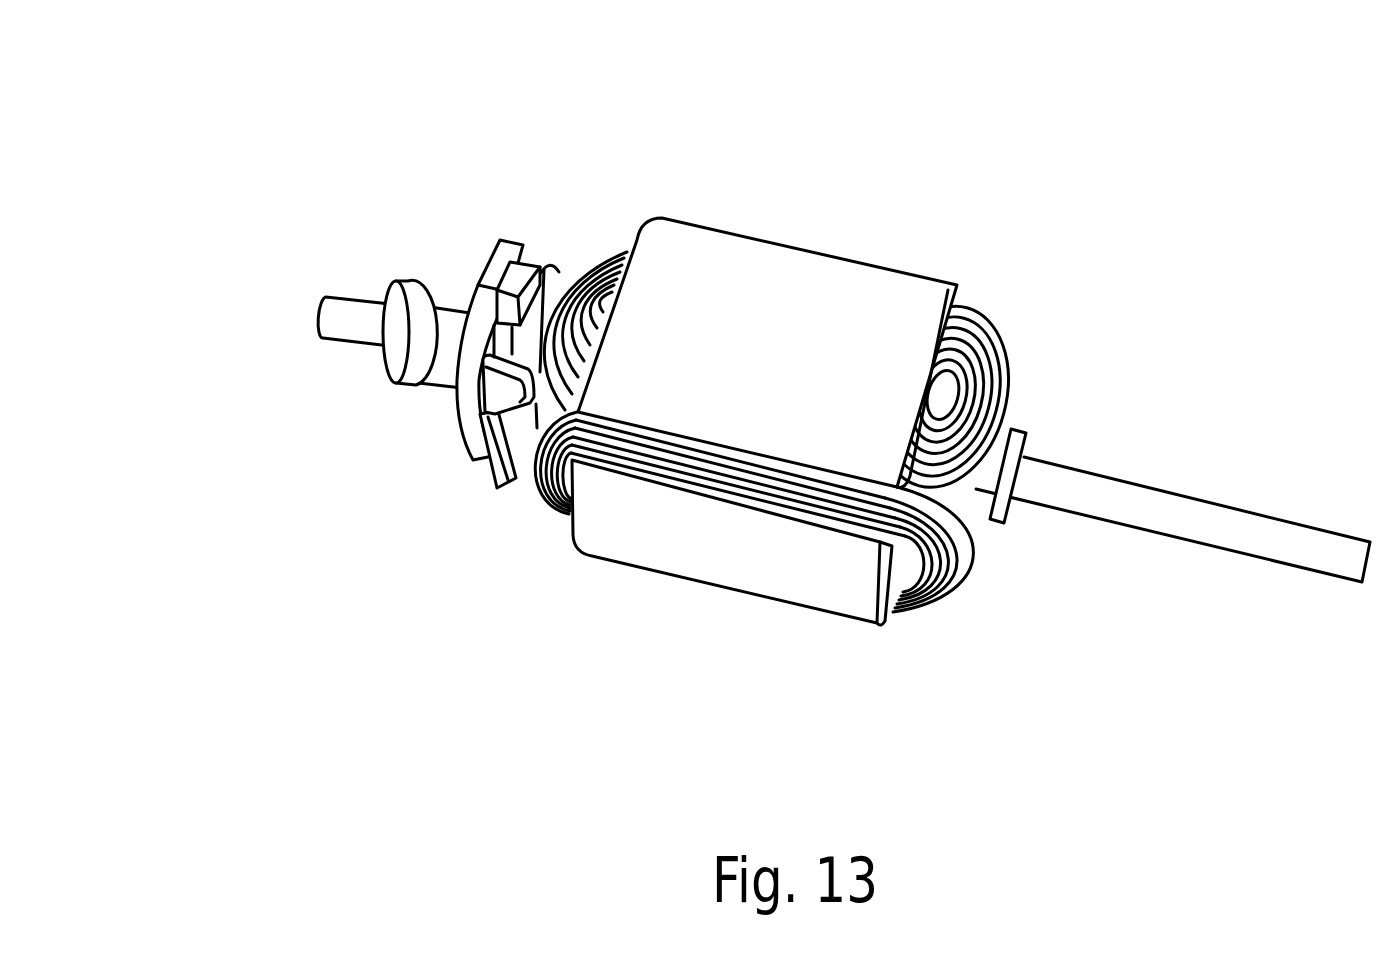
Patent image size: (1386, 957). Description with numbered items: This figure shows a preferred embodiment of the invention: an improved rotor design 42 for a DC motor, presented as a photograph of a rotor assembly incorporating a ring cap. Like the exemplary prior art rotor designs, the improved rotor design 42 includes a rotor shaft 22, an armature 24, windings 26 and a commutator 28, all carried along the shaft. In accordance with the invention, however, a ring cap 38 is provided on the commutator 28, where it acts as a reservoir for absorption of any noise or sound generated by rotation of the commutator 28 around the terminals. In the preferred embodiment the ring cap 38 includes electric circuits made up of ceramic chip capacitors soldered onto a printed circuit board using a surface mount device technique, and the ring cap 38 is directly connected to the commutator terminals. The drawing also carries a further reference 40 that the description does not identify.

The rotor shaft 22 is at (1205, 502).
The armature 24 is at (895, 328).
The windings 26 is at (958, 370).
The commutator 28 is at (535, 433).
The ring cap 38 is at (477, 276).
The terminal block 40 is at (555, 271).
The improved rotor design 42 is at (930, 660).